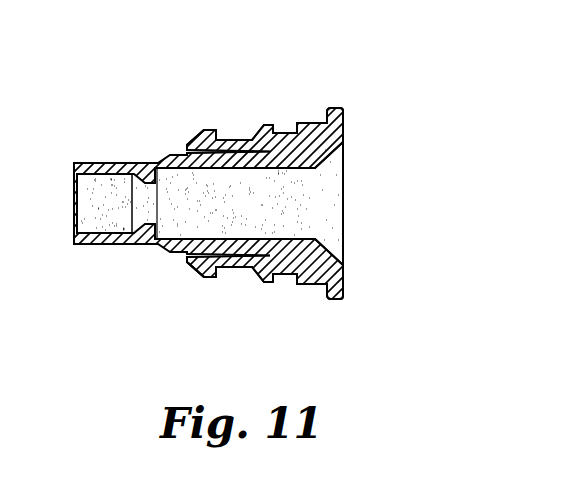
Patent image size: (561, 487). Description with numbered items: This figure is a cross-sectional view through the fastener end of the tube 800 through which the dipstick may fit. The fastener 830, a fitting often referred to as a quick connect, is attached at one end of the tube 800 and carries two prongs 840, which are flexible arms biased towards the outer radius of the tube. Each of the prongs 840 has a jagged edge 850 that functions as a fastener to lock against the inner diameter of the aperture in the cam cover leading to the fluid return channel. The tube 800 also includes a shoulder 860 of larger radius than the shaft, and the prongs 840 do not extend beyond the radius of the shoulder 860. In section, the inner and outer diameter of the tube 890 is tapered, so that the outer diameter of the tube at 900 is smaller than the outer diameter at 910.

The tube 800 is at (276, 205).
The fastener 830 is at (202, 315).
The prongs 840 is at (230, 138).
The jagged edge 850 is at (175, 136).
The shoulder 860 is at (333, 107).
The tube inner and outer diameter 890 is at (226, 216).
The outer diameter location 900 is at (98, 242).
The outer diameter location 910 is at (280, 258).